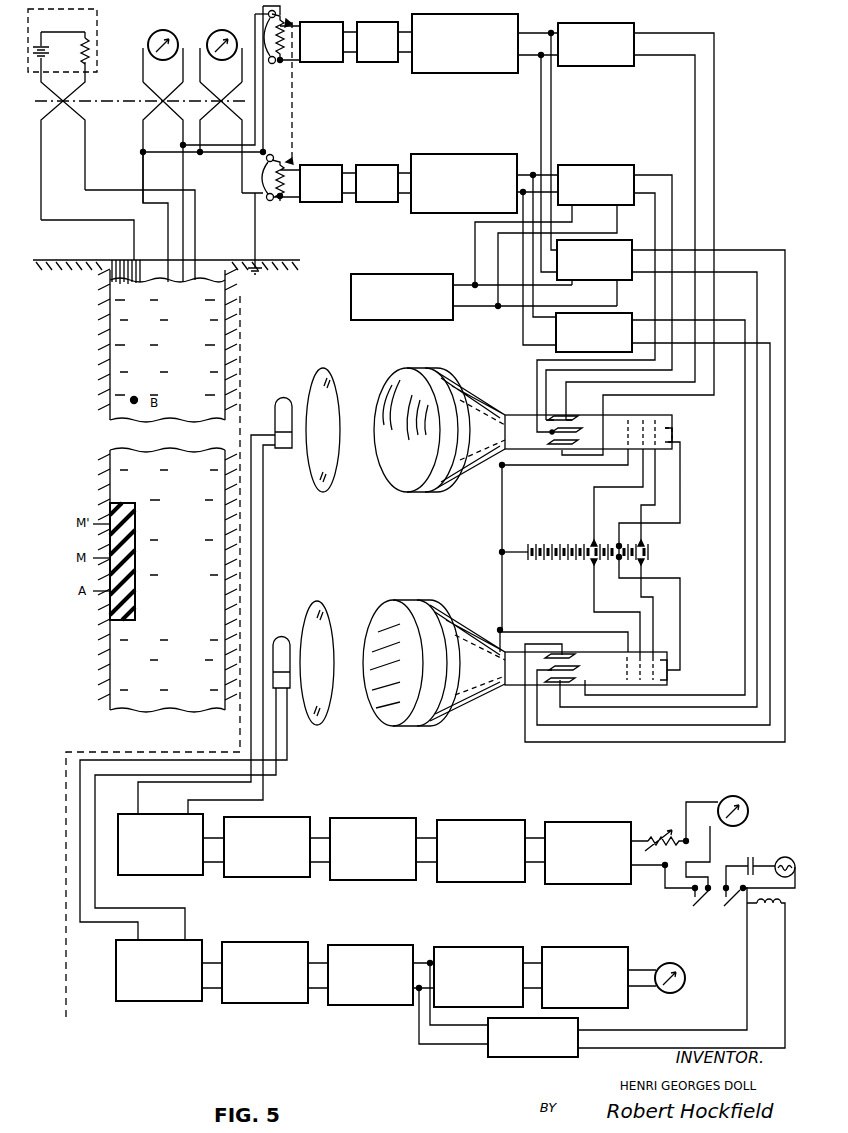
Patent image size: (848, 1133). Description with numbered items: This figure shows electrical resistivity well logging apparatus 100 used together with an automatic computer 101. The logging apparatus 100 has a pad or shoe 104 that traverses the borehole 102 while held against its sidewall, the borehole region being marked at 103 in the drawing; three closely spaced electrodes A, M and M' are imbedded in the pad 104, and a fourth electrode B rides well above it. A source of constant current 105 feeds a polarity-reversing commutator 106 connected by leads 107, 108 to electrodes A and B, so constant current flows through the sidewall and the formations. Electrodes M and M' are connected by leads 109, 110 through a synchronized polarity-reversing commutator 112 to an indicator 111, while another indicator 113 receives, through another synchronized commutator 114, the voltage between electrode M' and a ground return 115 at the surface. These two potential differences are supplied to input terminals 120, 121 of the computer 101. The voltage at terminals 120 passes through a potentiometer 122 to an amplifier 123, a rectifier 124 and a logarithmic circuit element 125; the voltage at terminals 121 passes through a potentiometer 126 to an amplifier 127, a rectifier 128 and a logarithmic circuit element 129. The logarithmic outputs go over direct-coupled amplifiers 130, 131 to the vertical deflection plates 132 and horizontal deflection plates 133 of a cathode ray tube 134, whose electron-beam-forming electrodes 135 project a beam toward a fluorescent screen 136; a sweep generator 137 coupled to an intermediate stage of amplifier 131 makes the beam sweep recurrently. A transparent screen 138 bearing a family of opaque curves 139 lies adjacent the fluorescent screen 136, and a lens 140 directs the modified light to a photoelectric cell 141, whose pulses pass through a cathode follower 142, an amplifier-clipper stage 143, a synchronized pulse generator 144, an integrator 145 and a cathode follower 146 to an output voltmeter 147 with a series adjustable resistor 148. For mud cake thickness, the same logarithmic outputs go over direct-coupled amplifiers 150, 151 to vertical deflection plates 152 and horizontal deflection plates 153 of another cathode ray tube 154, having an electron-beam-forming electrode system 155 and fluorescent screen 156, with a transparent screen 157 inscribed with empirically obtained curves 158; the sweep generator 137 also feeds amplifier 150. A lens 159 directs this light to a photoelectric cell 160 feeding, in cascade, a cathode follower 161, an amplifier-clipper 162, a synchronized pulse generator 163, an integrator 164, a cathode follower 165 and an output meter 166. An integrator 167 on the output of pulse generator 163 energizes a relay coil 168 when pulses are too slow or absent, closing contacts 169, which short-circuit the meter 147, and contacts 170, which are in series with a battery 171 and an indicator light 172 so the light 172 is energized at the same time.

The electrical resistivity well logging apparatus 100 is at (172, 22).
The automatic computer 101 is at (392, 127).
The borehole 102 is at (122, 261).
The borehole 103 is at (200, 278).
The pad or shoe 104 is at (135, 618).
The source of constant current 105 is at (96, 46).
The polarity-reversing commutator 106 is at (59, 100).
The lead 107 is at (96, 154).
The lead 108 is at (41, 188).
The lead 109 is at (185, 159).
The lead 110 is at (142, 178).
The indicator 111 is at (150, 28).
The polarity-reversing commutator 112 is at (145, 92).
The indicator 113 is at (225, 31).
The polarity-reversing commutator 114 is at (217, 92).
The ground return 115 is at (269, 267).
The input terminals 120 is at (272, 62).
The input terminals 121 is at (274, 164).
The potentiometer 122 is at (294, 24).
The amplifier 123 is at (318, 62).
The rectifier 124 is at (377, 62).
The logarithmic circuit element 125 is at (496, 74).
The potentiometer 126 is at (296, 160).
The amplifier 127 is at (324, 162).
The rectifier 128 is at (371, 163).
The logarithmic circuit element 129 is at (496, 154).
The direct-coupled amplifier 130 is at (620, 72).
The direct-coupled amplifier 131 is at (583, 164).
The vertical deflection plates 132 is at (549, 444).
The horizontal deflection plates 133 is at (568, 420).
The cathode ray tube 134 is at (523, 412).
The electron-beam-forming electrodes 135 is at (602, 439).
The fluorescent screen 136 is at (424, 370).
The sweep generator 137 is at (421, 272).
The transparent screen 138 is at (405, 489).
The family of opaque curves 139 is at (402, 386).
The lens 140 is at (317, 370).
The photoelectric cell 141 is at (276, 401).
The cathode follower 142 is at (178, 814).
The amplifier-clipper stage 143 is at (272, 817).
The synchronized pulse generator 144 is at (398, 818).
The integrator 145 is at (504, 820).
The cathode follower 146 is at (604, 820).
The output voltmeter 147 is at (748, 814).
The adjustable resistor 148 is at (650, 826).
The direct-coupled amplifier 150 is at (618, 242).
The direct-coupled amplifier 151 is at (616, 314).
The vertical deflection plates 152 is at (572, 654).
The horizontal deflection plates 153 is at (574, 677).
The cathode ray tube 154 is at (450, 703).
The electron-beam-forming electrode system 155 is at (604, 675).
The fluorescent screen 156 is at (420, 602).
The transparent screen 157 is at (385, 610).
The family of curves 158 is at (374, 632).
The lens 159 is at (328, 608).
The photoelectric cell 160 is at (281, 637).
The cathode follower 161 is at (180, 940).
The amplifier-clipper 162 is at (282, 942).
The synchronized pulse generator 163 is at (392, 945).
The integrator 164 is at (498, 946).
The cathode follower 165 is at (604, 947).
The output meter 166 is at (674, 964).
The integrator 167 is at (486, 1052).
The relay coil 168 is at (768, 905).
The contacts 169 is at (700, 902).
The contacts 170 is at (730, 903).
The battery 171 is at (746, 862).
The indicator light 172 is at (781, 855).